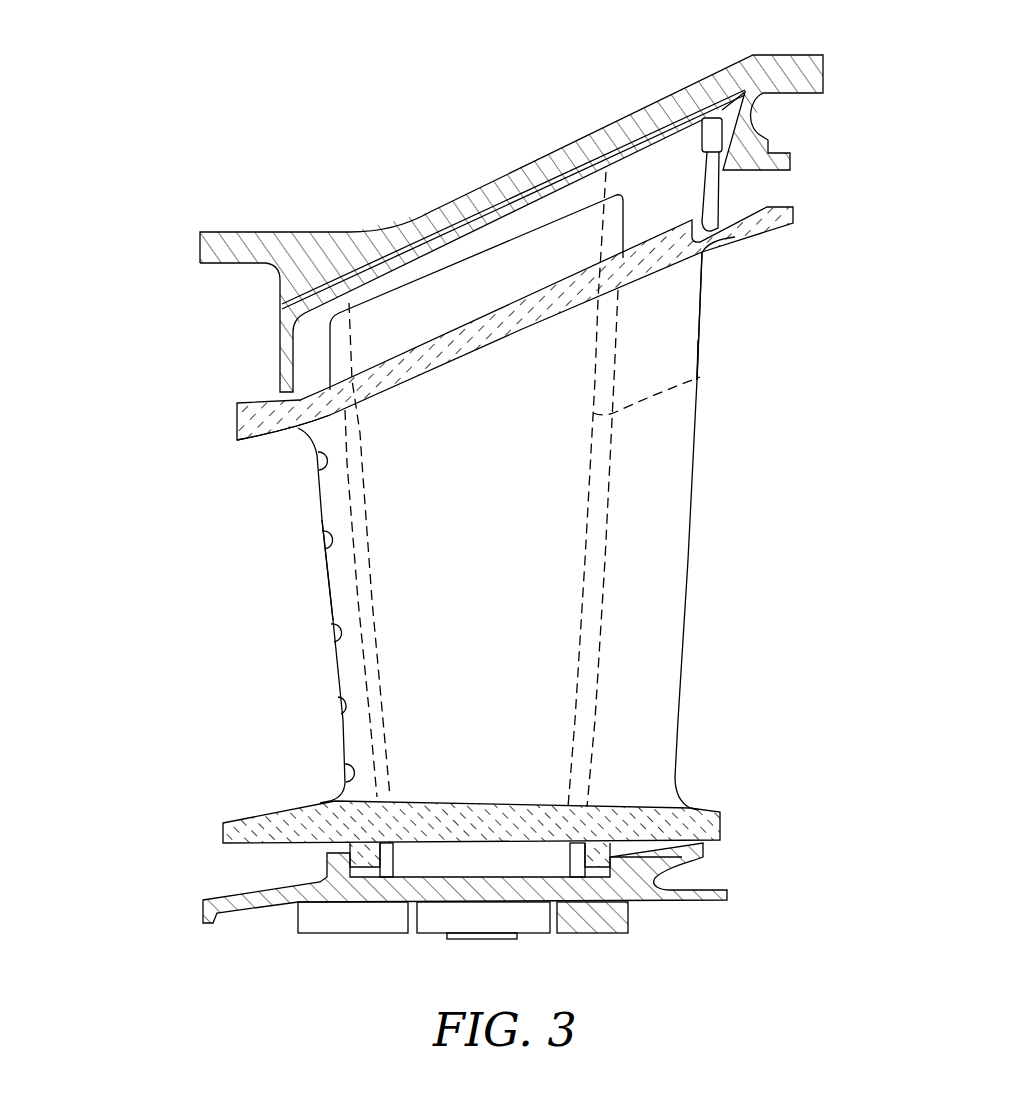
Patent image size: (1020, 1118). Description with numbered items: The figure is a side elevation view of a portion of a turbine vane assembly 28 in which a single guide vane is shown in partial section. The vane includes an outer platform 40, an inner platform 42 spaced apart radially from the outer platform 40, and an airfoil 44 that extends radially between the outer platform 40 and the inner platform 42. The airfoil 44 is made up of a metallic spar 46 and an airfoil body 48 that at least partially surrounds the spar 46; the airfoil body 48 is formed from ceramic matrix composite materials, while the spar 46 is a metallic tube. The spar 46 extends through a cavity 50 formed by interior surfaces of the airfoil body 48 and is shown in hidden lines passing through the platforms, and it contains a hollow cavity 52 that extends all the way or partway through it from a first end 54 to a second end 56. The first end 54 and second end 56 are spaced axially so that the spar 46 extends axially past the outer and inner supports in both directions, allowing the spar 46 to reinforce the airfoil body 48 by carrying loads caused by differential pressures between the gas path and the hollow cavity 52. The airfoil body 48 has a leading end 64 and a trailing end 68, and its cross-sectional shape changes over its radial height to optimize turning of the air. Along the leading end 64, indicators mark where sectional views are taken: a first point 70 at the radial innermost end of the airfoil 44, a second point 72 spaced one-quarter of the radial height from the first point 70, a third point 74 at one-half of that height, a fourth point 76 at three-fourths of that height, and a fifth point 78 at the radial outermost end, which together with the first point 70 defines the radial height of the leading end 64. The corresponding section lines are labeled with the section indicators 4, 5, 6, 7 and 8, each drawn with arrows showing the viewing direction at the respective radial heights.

The turbine section 28 is at (116, 98).
The outer platform 40 is at (812, 214).
The inner platform 42 is at (745, 831).
The airfoil 44 is at (519, 555).
The metallic spar 46 is at (686, 380).
The airfoil body 48 is at (720, 316).
The cavity 50 is at (336, 406).
The hollow cavity 52 is at (491, 173).
The first end 54 is at (446, 197).
The second end 56 is at (433, 868).
The leading end 64 is at (325, 607).
The trailing end 68 is at (702, 355).
The first point 70 is at (346, 765).
The second point 72 is at (341, 714).
The third point 74 is at (334, 642).
The fourth point 76 is at (325, 549).
The fifth point 78 is at (319, 470).
The section line 4- 4 is at (338, 780).
The section line 5- 5 is at (337, 685).
The section line 6- 6 is at (330, 608).
The section line 7- 7 is at (320, 525).
The section line 8- 8 is at (307, 452).